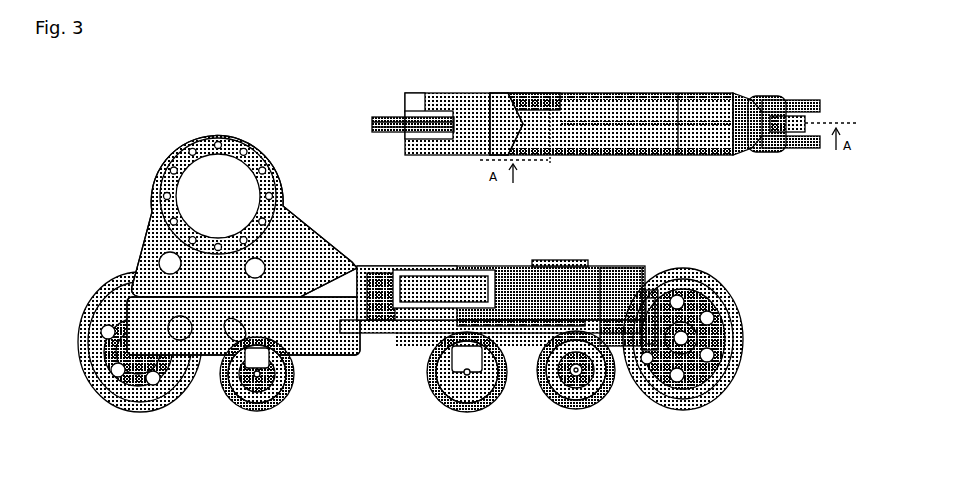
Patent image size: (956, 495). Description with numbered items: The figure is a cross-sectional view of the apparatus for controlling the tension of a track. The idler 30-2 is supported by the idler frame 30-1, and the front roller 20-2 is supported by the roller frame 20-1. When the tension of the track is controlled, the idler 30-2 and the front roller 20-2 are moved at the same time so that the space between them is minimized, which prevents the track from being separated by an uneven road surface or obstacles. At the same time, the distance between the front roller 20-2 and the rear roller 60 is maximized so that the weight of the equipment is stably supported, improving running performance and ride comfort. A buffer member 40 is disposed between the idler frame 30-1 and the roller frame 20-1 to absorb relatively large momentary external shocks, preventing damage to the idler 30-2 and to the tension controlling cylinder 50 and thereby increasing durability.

The roller frame 20-1 is at (568, 412).
The front roller 20-2 is at (598, 412).
The idler frame 30-1 is at (690, 268).
The idler 30-2 is at (720, 279).
The buffer member 40 is at (540, 259).
The tension controlling cylinder 50 is at (456, 270).
The rear roller 60 is at (250, 412).